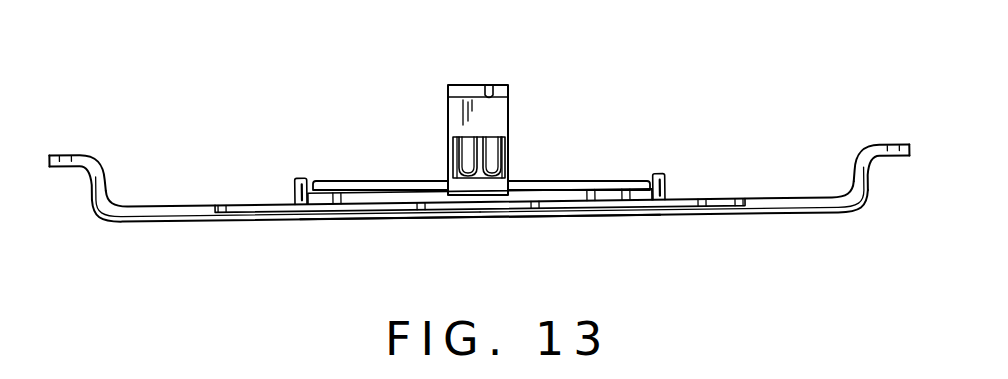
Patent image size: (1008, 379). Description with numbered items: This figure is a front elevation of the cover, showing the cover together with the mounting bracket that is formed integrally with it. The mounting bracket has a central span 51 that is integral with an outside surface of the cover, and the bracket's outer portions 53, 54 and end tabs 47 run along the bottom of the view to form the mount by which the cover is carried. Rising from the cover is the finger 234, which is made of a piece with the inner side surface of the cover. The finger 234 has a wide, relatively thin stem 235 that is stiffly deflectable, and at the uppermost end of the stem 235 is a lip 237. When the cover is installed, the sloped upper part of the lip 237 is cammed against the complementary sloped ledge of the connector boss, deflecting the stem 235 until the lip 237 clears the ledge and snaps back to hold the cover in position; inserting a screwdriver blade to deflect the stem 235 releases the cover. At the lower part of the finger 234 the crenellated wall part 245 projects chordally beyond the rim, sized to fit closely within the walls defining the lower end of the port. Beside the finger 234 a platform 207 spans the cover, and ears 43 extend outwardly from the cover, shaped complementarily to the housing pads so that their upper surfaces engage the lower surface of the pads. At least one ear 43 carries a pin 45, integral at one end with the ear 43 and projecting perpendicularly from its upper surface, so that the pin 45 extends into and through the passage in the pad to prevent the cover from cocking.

The ears 43 is at (290, 205).
The pin 45 is at (303, 177).
The mounting tab 47 is at (83, 154).
The central span 51 is at (522, 218).
The base plate right portion 53 is at (749, 199).
The base plate left portion 54 is at (169, 206).
The circuit board 207 is at (368, 206).
The finger 234 is at (448, 115).
The stem 235 is at (490, 123).
The lip 237 is at (492, 94).
The crenellated wall part 245 is at (492, 182).